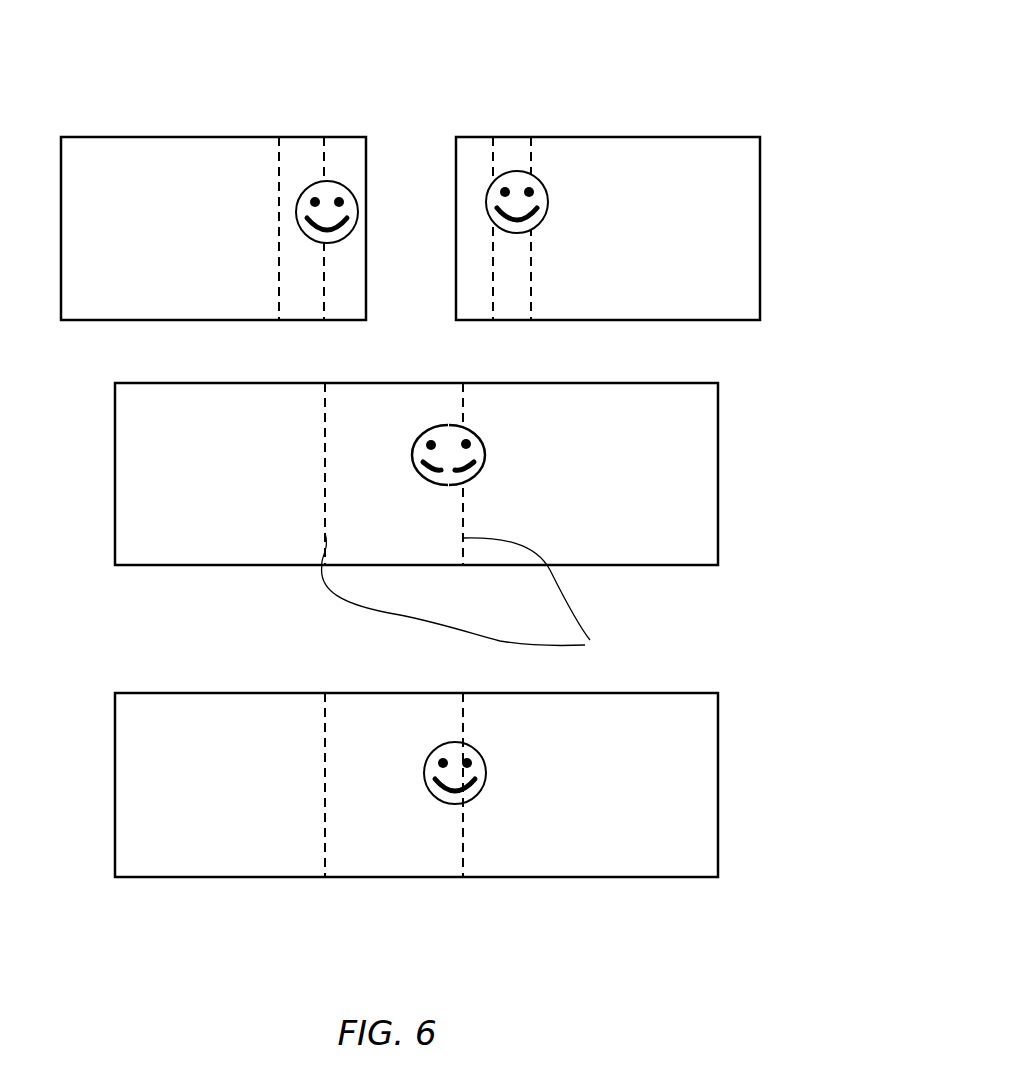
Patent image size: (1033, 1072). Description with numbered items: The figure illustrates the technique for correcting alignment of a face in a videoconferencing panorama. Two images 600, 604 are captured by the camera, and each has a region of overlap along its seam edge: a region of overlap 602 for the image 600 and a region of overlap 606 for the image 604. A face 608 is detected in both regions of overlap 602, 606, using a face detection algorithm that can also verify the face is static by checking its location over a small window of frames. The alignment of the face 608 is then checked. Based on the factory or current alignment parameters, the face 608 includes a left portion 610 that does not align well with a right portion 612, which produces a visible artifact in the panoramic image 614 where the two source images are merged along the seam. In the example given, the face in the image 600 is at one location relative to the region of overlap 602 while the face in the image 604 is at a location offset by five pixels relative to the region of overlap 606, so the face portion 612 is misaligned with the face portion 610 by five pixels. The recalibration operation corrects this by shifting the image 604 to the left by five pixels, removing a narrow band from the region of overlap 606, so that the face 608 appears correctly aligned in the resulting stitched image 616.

The image 600 is at (150, 136).
The region of overlap 602 is at (365, 128).
The image 604 is at (610, 135).
The region of overlap 606 is at (455, 128).
The face 608 is at (540, 203).
The left portion 610 is at (407, 457).
The right portion 612 is at (488, 460).
The panoramic image 614 is at (715, 480).
The final stitched image 616 is at (715, 800).